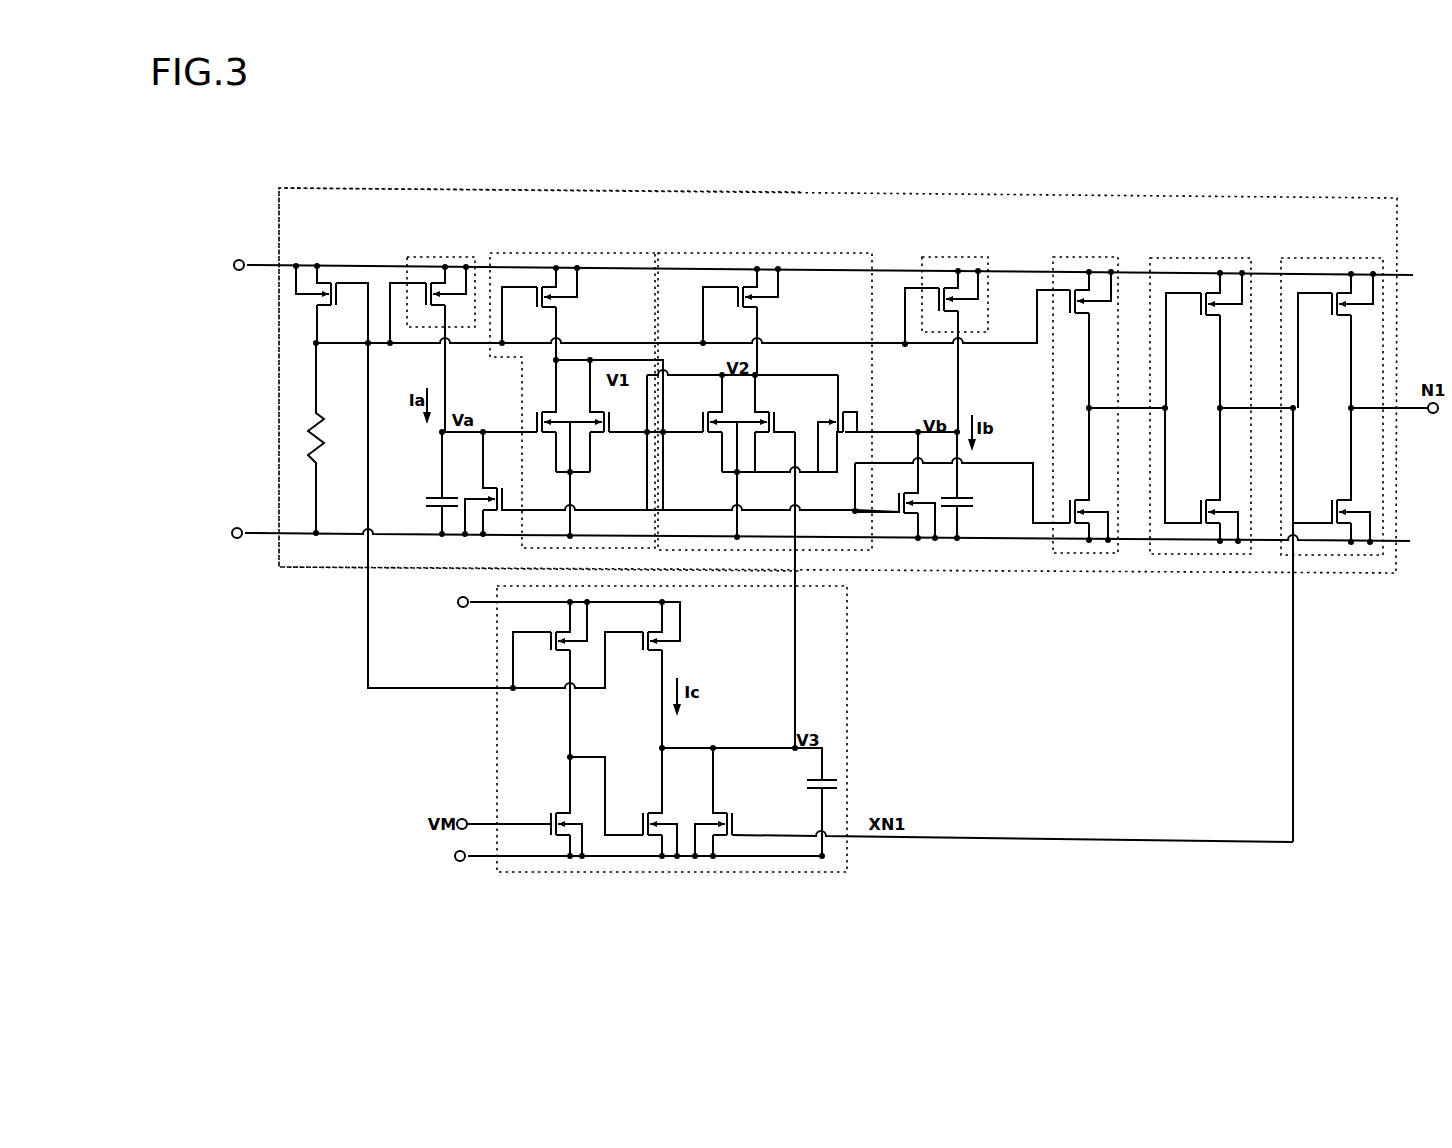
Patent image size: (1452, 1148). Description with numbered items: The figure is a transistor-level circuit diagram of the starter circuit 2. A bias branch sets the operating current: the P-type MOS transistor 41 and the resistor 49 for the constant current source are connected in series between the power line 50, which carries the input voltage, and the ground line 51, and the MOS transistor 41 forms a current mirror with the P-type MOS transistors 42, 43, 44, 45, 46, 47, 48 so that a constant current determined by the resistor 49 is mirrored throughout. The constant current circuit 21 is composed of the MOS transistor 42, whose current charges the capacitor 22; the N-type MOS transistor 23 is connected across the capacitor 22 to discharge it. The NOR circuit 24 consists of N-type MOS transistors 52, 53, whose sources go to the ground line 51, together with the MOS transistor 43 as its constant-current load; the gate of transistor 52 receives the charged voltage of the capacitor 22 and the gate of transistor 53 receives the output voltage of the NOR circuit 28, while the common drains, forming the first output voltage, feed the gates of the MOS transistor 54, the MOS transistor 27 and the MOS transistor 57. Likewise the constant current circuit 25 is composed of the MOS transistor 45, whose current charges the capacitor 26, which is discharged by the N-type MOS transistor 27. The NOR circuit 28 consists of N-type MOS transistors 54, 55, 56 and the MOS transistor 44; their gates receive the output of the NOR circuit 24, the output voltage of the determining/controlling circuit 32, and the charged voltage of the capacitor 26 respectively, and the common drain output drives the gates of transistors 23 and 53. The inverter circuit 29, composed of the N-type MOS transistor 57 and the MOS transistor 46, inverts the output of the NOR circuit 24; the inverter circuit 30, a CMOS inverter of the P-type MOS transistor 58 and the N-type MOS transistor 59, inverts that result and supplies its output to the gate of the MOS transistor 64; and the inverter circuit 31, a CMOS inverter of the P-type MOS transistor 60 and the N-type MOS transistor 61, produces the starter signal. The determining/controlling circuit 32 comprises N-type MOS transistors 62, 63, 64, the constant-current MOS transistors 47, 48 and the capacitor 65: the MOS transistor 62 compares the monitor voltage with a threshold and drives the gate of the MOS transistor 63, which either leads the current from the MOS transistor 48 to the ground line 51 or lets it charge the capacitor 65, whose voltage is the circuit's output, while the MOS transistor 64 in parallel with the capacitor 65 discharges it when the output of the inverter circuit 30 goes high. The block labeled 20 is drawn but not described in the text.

The starter circuit 2 is at (1251, 190).
The detection circuit block 20 is at (356, 188).
The constant current circuit 21 is at (447, 257).
The capacitor 22 is at (426, 498).
The N-type MOS transistor 23 is at (503, 486).
The NOR circuit 24 is at (575, 252).
The constant current circuit 25 is at (957, 257).
The capacitor 26 is at (974, 498).
The N-type MOS transistor 27 is at (898, 496).
The NOR circuit 28 is at (770, 253).
The inverter circuit 29 is at (1090, 257).
The inverter circuit 30 is at (1202, 258).
The inverter circuit 31 is at (1335, 258).
The determining/controlling circuit 32 is at (849, 655).
The P-type MOS transistor 41 is at (337, 300).
The P-type MOS transistor 42 is at (425, 292).
The P-type MOS transistor 43 is at (536, 298).
The P-type MOS transistor 44 is at (738, 298).
The P-type MOS transistor 45 is at (937, 295).
The P-type MOS transistor 46 is at (1068, 312).
The P-type MOS transistor 47 is at (550, 644).
The P-type MOS transistor 48 is at (643, 644).
The resistor 49 is at (320, 430).
The power line 50 is at (263, 263).
The ground line 51 is at (333, 537).
The N-type MOS transistor 52 is at (540, 440).
The N-type MOS transistor 53 is at (605, 440).
The N-type MOS transistor 54 is at (706, 440).
The N-type MOS transistor 55 is at (776, 410).
The N-type MOS transistor 56 is at (848, 410).
The N-type MOS transistor 57 is at (1072, 498).
The P-type MOS transistor 58 is at (1200, 304).
The N-type MOS transistor 59 is at (1203, 498).
The P-type MOS transistor 60 is at (1332, 304).
The N-type MOS transistor 61 is at (1333, 498).
The N-type MOS transistor 62 is at (556, 810).
The N-type MOS transistor 63 is at (648, 810).
The N-type MOS transistor 64 is at (728, 810).
The capacitor 65 is at (810, 780).